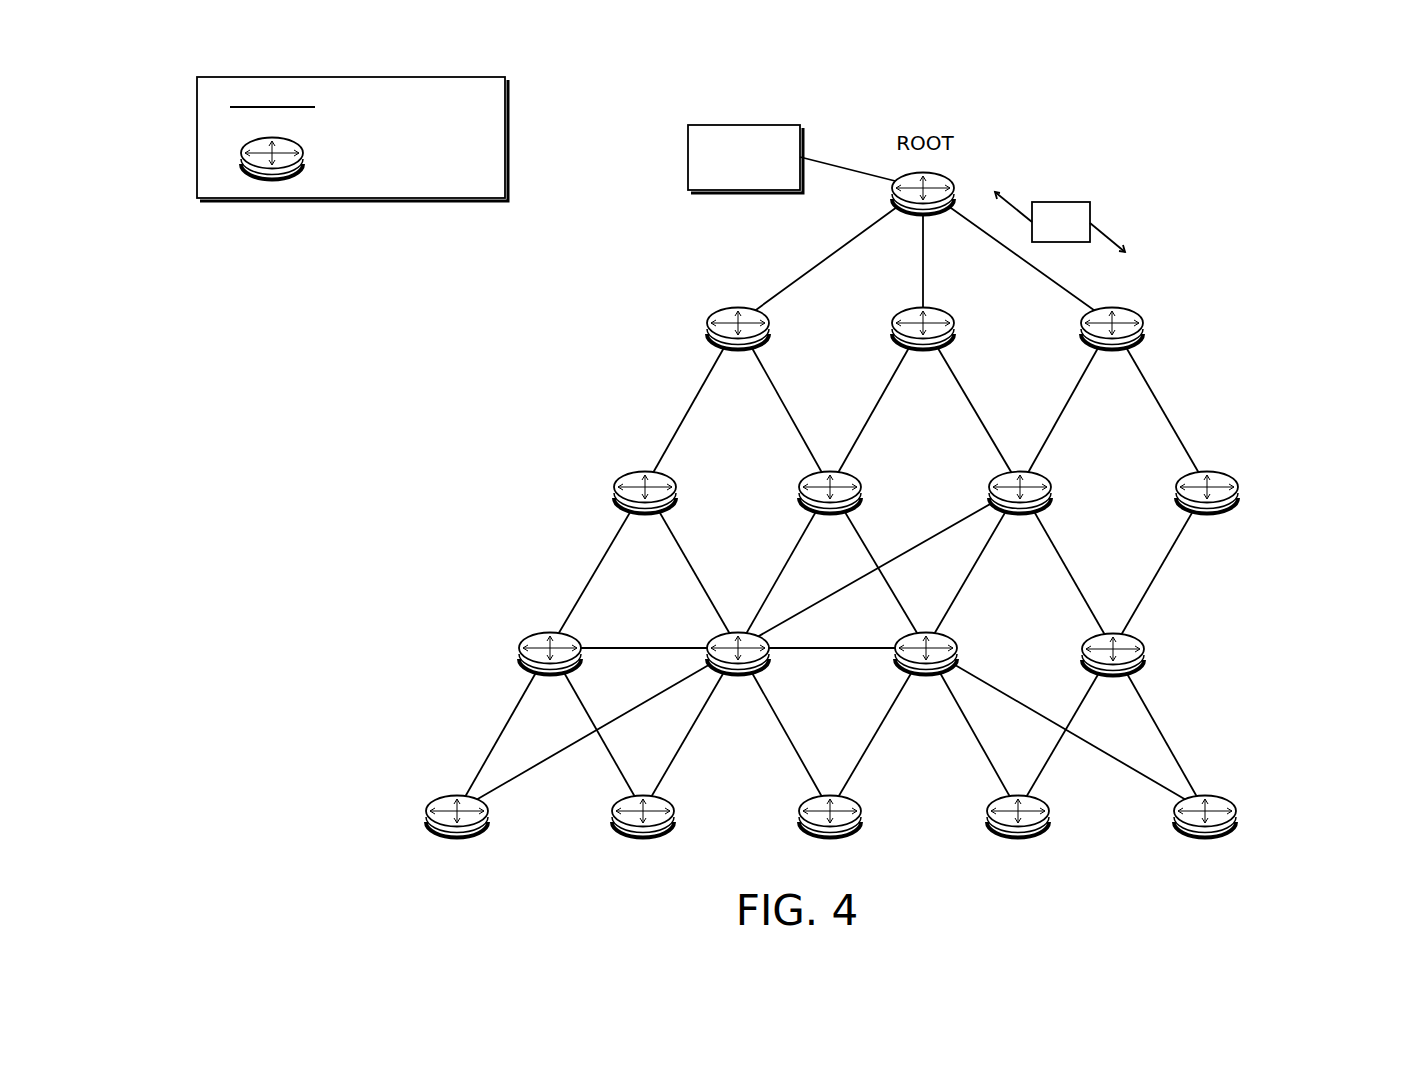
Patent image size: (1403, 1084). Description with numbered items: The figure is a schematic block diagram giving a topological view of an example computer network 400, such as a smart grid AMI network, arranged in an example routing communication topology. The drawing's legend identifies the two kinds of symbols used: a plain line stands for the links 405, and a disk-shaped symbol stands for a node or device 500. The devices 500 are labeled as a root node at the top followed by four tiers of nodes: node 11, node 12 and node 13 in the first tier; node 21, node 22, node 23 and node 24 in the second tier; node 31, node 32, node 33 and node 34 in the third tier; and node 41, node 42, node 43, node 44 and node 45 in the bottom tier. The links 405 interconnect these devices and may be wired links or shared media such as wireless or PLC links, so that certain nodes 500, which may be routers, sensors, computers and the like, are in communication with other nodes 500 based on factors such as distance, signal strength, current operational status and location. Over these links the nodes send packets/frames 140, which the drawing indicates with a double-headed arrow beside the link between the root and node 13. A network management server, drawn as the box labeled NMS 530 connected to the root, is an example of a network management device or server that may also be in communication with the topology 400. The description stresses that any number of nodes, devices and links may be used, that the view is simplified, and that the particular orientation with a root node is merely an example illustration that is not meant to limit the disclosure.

The computer network 400 is at (1290, 140).
The links 405 is at (339, 107).
The devices (nodes) 500 is at (345, 159).
The network management server (NMS) 530 is at (729, 182).
The packets/frames 140 is at (1046, 233).
The node 11 is at (738, 349).
The node 12 is at (923, 349).
The node 13 is at (1112, 348).
The node 21 is at (645, 512).
The node 22 is at (830, 512).
The node 23 is at (1020, 511).
The node 24 is at (1207, 511).
The node 31 is at (550, 672).
The node 32 is at (738, 672).
The node 33 is at (926, 672).
The node 34 is at (1113, 673).
The node 41 is at (457, 836).
The node 42 is at (643, 836).
The node 43 is at (830, 836).
The node 44 is at (1018, 835).
The node 45 is at (1205, 835).